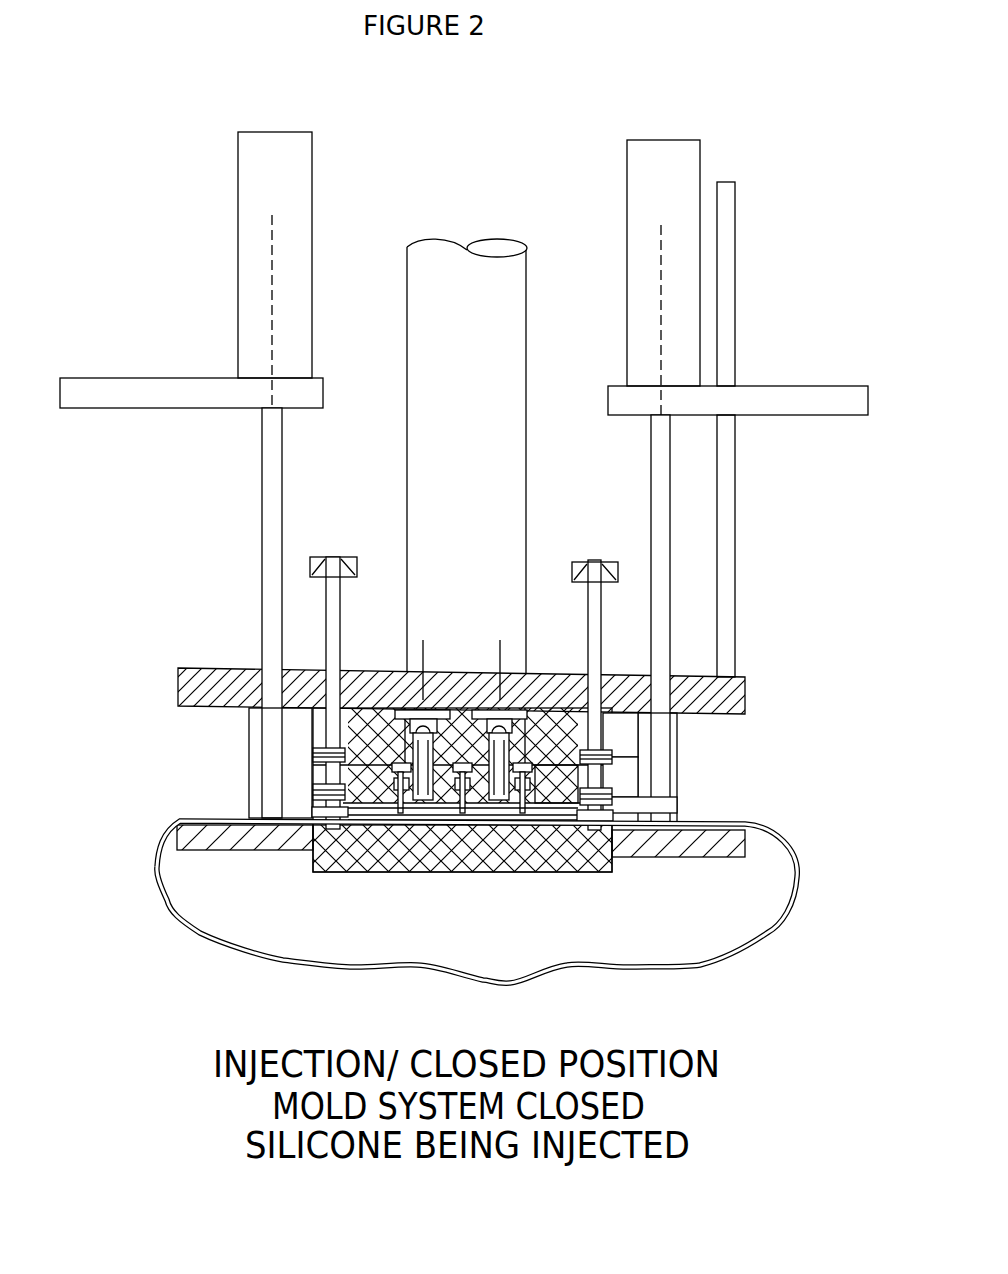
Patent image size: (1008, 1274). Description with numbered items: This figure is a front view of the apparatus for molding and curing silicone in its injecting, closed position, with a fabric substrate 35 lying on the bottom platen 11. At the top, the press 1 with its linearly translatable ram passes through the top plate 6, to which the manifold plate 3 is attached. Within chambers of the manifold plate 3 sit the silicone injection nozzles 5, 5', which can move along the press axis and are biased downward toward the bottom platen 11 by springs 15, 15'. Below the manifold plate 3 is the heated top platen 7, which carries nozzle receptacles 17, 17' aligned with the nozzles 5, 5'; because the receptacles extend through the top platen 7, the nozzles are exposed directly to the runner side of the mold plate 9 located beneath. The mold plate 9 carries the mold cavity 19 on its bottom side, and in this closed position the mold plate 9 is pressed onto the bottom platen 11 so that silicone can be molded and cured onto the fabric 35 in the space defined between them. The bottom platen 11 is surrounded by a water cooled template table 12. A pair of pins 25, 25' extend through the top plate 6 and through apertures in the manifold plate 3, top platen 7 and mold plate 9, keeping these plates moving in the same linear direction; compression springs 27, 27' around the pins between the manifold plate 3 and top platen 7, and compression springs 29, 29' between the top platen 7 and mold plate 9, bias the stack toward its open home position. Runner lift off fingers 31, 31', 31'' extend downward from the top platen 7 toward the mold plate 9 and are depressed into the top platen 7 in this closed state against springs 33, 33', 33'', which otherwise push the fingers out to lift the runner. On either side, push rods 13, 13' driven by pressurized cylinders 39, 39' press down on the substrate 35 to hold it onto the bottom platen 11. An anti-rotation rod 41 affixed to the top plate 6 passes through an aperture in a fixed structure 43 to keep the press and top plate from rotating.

The press 1 is at (513, 484).
The manifold plate 3 is at (605, 723).
The injection nozzle 5 is at (399, 688).
The injection nozzle 5' is at (521, 696).
The top plate 6 is at (746, 690).
The top platen 7 is at (605, 779).
The mold plate 9 is at (608, 818).
The bottom platen 11 is at (317, 860).
The water cooled template table 12 is at (690, 851).
The push rod 13 is at (231, 763).
The push rod 13' is at (742, 768).
The spring 15 is at (422, 658).
The spring 15' is at (500, 657).
The nozzle receptacle 17 is at (463, 869).
The nozzle receptacle 17' is at (463, 866).
The mold cavity 19 is at (362, 822).
The pin 25 is at (340, 660).
The pin 25' is at (601, 663).
The compression spring 27 is at (277, 738).
The compression spring 27' is at (686, 747).
The compression spring 29 is at (276, 795).
The compression spring 29' is at (689, 797).
The runner lift off finger 31 is at (385, 852).
The runner lift off finger 31' is at (480, 853).
The runner lift off finger 31'' is at (566, 855).
The spring 33 is at (386, 688).
The spring 33' is at (481, 685).
The spring 33'' is at (565, 709).
The fabric substrate 35 is at (772, 935).
The pressurized cylinder 39 is at (230, 446).
The pressurized cylinder 39' is at (726, 457).
The anti-rotation rod 41 is at (728, 288).
The fixed structure 43 is at (827, 413).